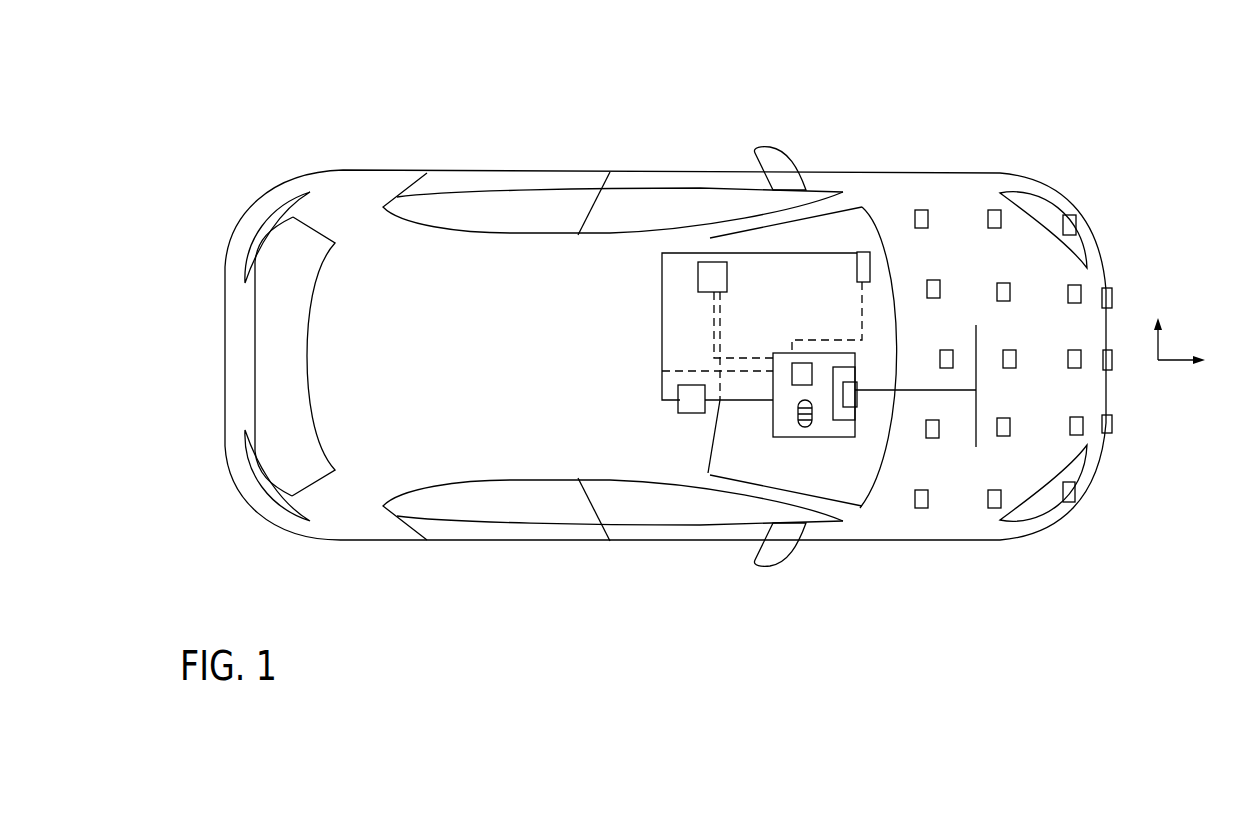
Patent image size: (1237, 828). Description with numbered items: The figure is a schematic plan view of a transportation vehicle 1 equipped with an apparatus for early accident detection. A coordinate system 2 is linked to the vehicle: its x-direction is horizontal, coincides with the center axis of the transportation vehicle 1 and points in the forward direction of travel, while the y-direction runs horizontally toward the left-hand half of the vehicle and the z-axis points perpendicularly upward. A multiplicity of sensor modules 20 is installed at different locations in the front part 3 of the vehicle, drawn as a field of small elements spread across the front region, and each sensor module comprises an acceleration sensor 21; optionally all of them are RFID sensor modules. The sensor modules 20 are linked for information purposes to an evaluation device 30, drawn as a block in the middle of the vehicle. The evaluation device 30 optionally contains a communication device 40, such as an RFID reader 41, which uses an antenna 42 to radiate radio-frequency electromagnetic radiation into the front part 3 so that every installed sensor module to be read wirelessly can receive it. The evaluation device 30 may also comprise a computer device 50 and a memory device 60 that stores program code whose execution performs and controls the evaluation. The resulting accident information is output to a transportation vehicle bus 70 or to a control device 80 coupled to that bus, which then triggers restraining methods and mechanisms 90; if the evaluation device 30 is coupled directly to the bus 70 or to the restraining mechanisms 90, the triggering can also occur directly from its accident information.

The transportation vehicle 1 is at (519, 112).
The coordinate system 2 is at (1174, 345).
The front part 3 is at (1034, 140).
The sensor module 20 is at (1027, 333).
The acceleration sensor 21 is at (921, 218).
The evaluation device 30 is at (803, 357).
The communication device 40 is at (861, 357).
The RFID reader 41 is at (850, 403).
The antenna 42 is at (976, 447).
The computer device 50 is at (802, 373).
The memory device 60 is at (803, 422).
The transportation vehicle bus 70 is at (660, 270).
The control device 80 is at (693, 400).
The restraining methods and mechanisms 90 is at (710, 272).